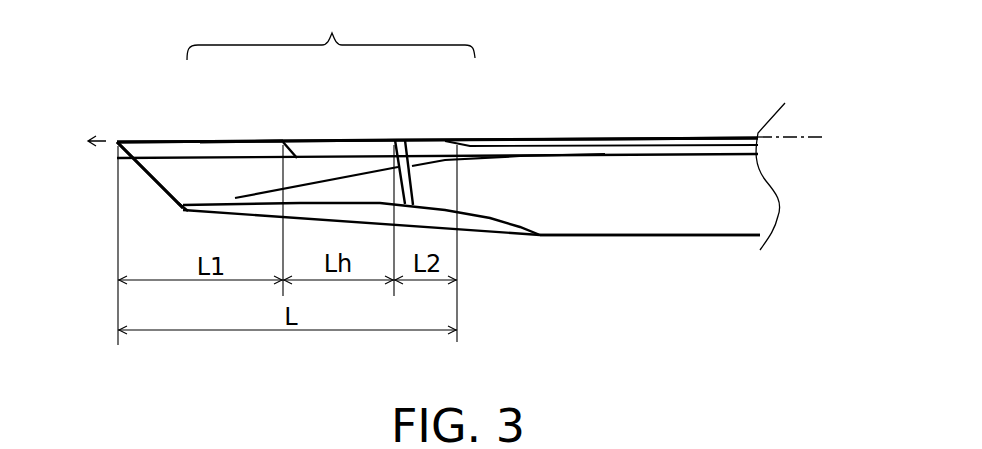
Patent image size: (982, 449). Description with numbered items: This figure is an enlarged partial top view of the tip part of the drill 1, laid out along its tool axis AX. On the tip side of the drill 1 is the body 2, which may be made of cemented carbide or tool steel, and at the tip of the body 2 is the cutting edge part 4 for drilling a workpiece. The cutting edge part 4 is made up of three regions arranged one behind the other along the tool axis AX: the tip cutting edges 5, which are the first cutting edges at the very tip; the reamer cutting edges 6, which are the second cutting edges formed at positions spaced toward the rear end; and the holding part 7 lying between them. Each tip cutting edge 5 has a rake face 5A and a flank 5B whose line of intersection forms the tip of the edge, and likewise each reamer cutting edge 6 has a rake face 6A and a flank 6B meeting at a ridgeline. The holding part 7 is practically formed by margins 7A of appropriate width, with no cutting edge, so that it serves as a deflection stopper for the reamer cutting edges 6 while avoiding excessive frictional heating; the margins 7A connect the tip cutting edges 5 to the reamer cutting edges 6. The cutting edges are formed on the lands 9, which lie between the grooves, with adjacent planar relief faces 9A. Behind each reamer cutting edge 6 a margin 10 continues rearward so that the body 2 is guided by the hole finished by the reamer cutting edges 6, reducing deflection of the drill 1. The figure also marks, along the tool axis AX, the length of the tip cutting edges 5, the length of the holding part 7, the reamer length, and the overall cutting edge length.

The drill 1 is at (604, 99).
The body 2 is at (672, 236).
The cutting edge part 4 is at (331, 33).
The tip cutting edge 5 is at (208, 140).
The rake face 5A is at (160, 140).
The flank 5B is at (235, 140).
The reamer cutting edge 6 is at (428, 140).
The rake face 6A is at (417, 140).
The flank 6B is at (438, 140).
The holding part 7 is at (342, 140).
The margin 7A is at (320, 140).
The land 9 is at (562, 238).
The planar relief face 9A is at (177, 204).
The margin 10 is at (675, 138).
The tool axis AX is at (793, 137).